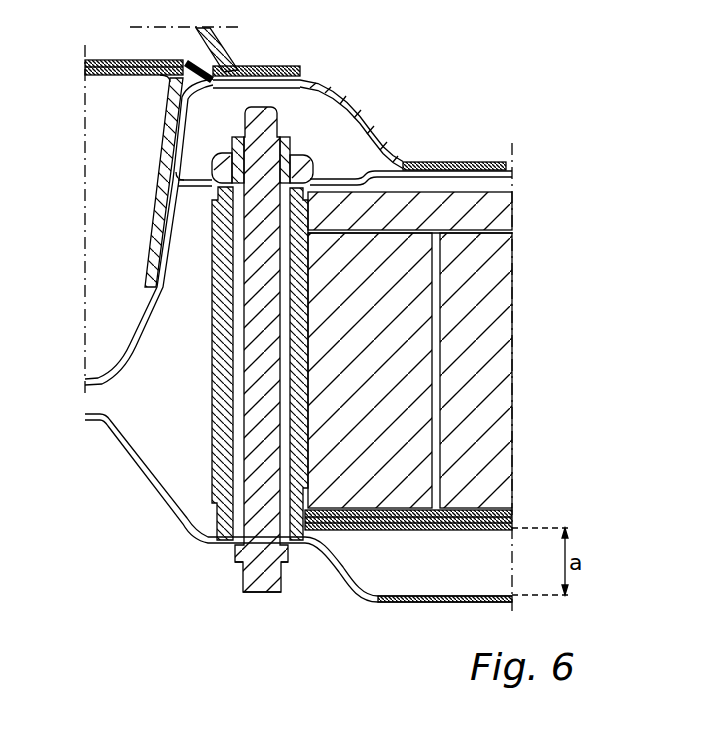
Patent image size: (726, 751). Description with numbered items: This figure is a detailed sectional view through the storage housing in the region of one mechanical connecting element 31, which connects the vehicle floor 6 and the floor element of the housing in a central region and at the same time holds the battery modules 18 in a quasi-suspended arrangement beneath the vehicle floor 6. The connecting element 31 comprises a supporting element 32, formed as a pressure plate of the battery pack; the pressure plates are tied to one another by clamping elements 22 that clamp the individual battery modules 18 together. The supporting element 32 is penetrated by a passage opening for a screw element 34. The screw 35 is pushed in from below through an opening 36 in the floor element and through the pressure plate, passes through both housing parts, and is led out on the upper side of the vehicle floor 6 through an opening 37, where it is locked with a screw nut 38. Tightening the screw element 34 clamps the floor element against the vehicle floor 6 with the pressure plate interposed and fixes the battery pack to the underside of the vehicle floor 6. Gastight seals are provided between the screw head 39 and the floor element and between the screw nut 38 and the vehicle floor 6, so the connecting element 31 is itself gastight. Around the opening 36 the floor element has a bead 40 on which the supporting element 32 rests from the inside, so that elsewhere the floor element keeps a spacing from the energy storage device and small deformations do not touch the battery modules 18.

The vehicle floor 6 is at (413, 168).
The battery module 18 is at (563, 264).
The clamping element 22 is at (493, 215).
The mechanical connecting element 31 is at (172, 412).
The supporting element 32 is at (180, 507).
The screw element 34 is at (262, 480).
The screw 35 is at (223, 438).
The opening 36 is at (292, 565).
The opening 37 is at (303, 182).
The screw nut 38 is at (294, 170).
The screw head 39 is at (262, 570).
The bead 40 is at (330, 577).